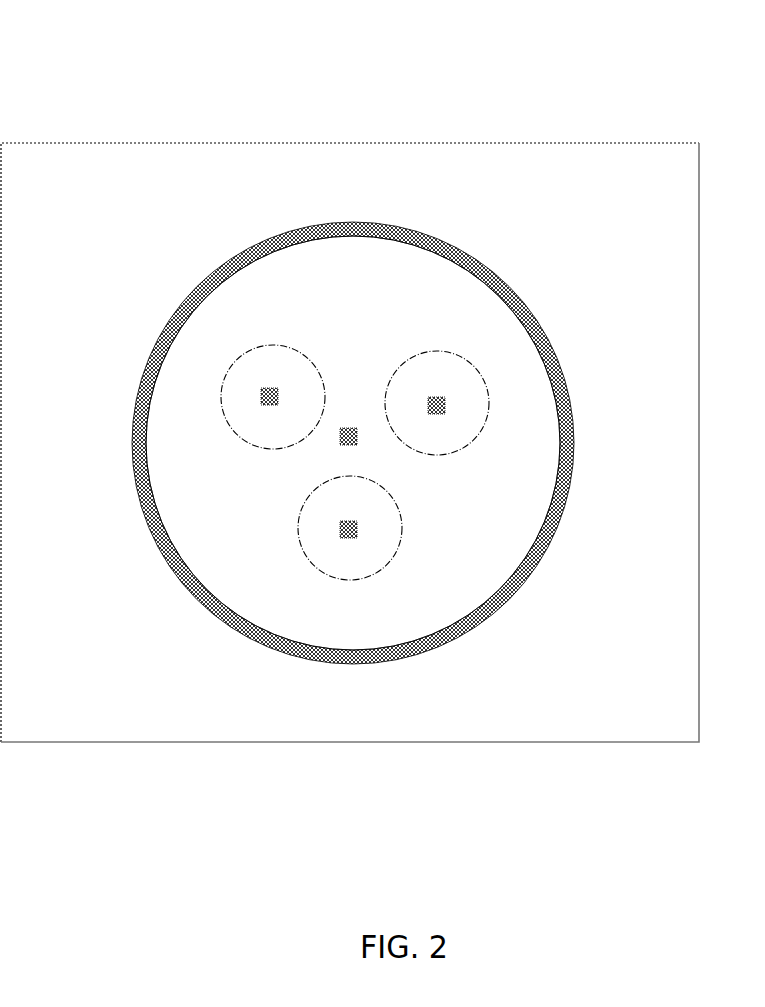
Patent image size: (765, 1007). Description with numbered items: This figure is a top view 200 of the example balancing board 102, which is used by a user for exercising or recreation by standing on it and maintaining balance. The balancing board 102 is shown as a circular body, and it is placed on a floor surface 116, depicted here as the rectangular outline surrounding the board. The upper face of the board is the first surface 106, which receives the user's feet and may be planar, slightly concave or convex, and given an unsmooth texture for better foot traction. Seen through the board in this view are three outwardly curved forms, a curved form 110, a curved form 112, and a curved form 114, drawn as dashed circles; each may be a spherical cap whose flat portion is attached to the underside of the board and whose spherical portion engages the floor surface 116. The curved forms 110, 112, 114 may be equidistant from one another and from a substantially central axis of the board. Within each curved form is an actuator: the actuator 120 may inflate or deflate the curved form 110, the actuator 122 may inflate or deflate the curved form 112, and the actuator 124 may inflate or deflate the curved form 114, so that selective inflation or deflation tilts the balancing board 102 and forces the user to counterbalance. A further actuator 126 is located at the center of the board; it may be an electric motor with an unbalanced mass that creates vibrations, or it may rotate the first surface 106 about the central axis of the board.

The top view 200 is at (212, 88).
The floor surface 116 is at (535, 143).
The balancing board 102 is at (535, 315).
The first surface 106 is at (347, 262).
The curved form 110 is at (273, 449).
The curved form 112 is at (352, 580).
The curved form 114 is at (437, 455).
The actuator 120 is at (261, 393).
The actuator 122 is at (328, 538).
The actuator 124 is at (445, 396).
The actuator 126 is at (352, 427).